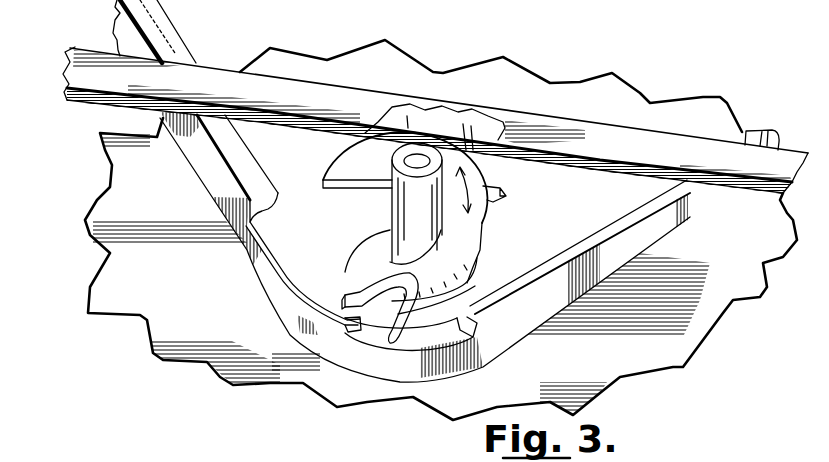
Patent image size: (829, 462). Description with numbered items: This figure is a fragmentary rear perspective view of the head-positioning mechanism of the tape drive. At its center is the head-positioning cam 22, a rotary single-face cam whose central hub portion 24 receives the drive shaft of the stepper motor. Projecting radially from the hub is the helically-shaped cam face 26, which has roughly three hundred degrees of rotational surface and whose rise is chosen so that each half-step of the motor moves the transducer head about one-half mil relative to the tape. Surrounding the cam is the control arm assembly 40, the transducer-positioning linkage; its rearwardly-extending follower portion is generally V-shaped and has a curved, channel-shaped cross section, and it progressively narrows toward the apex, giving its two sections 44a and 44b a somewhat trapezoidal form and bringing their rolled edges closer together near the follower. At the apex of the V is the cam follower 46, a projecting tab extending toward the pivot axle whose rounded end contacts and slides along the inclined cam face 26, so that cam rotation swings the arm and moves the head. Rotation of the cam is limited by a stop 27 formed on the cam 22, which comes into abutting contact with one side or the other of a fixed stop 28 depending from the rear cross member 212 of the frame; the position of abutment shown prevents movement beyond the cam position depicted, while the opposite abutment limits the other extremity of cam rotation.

The rear cross member 212 is at (625, 152).
The fixed stop 28 is at (478, 130).
The side of follower portion 44b is at (196, 149).
The control arm assembly 40 is at (238, 257).
The section of follower portion 44a is at (640, 247).
The head-positioning cam 22 is at (497, 241).
The central hub portion 24 is at (392, 208).
The cam face 26 is at (466, 263).
The stop 27 is at (507, 193).
The cam follower 46 is at (390, 288).